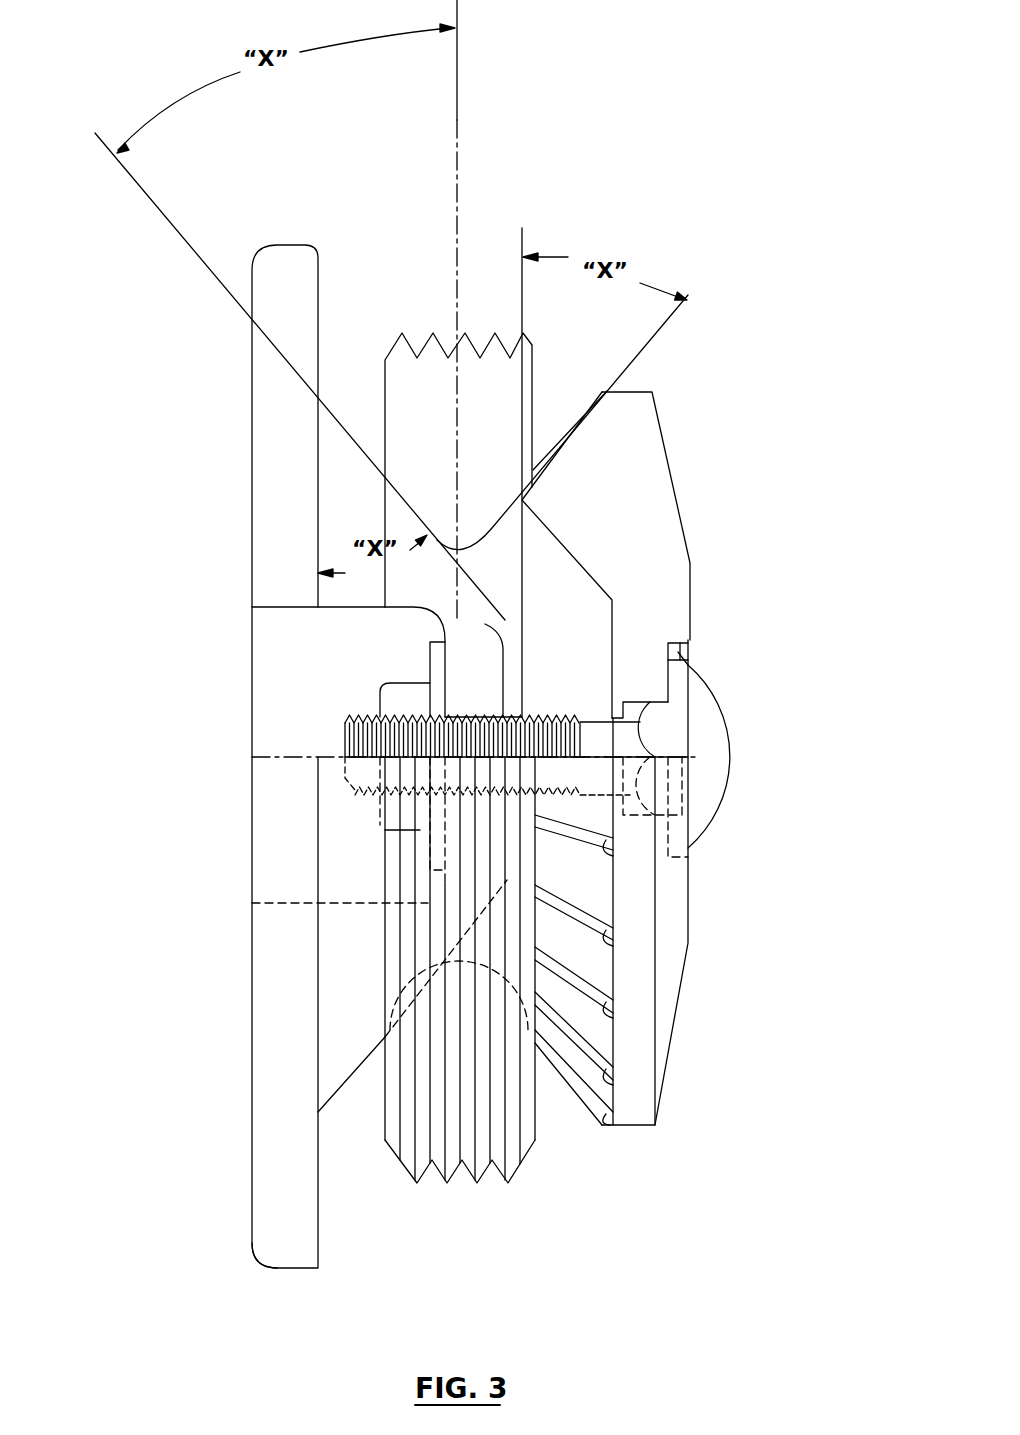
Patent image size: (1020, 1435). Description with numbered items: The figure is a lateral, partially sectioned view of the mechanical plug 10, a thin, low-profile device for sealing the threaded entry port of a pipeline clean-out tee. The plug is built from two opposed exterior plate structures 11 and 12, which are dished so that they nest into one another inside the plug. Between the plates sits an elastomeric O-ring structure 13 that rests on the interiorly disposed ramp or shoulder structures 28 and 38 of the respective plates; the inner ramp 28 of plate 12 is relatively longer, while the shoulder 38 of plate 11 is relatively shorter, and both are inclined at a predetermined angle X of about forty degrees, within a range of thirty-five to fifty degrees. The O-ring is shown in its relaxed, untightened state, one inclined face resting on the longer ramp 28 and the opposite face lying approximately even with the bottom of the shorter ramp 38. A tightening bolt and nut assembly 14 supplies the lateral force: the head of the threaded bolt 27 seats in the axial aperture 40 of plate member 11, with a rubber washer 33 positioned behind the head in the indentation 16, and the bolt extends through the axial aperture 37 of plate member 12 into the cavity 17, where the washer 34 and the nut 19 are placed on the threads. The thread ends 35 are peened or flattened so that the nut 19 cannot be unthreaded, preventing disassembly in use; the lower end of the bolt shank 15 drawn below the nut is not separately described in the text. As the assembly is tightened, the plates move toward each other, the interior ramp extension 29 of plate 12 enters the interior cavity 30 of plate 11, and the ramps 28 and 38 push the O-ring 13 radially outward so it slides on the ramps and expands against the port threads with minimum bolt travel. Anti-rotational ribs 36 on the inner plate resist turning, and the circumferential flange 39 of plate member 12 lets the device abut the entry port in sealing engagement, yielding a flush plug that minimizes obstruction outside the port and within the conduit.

The mechanical plug 10 is at (693, 403).
The exterior plate structure 11 is at (650, 487).
The exterior plate structure 12 is at (280, 395).
The elastomeric O-ring structure 13 is at (400, 383).
The tightening bolt and nut assembly 14 is at (736, 718).
The splined shaft 15 is at (455, 1177).
The indentation 16 is at (688, 663).
The cavity 17 is at (290, 640).
The nut 19 is at (395, 696).
The threaded bolt 27 is at (708, 805).
The inner ramp 28 is at (350, 1085).
The interior ramp extension 29 is at (490, 614).
The interior cavity 30 is at (580, 664).
The washer 33 is at (688, 662).
The washer 34 is at (440, 662).
The thread ends 35 is at (345, 725).
The anti-rotational ribs 36 is at (598, 1003).
The axial aperture 37 is at (498, 712).
The ramp or shoulder structure 38 is at (600, 887).
The circumferential flange 39 is at (298, 1242).
The axial aperture 40 is at (633, 700).